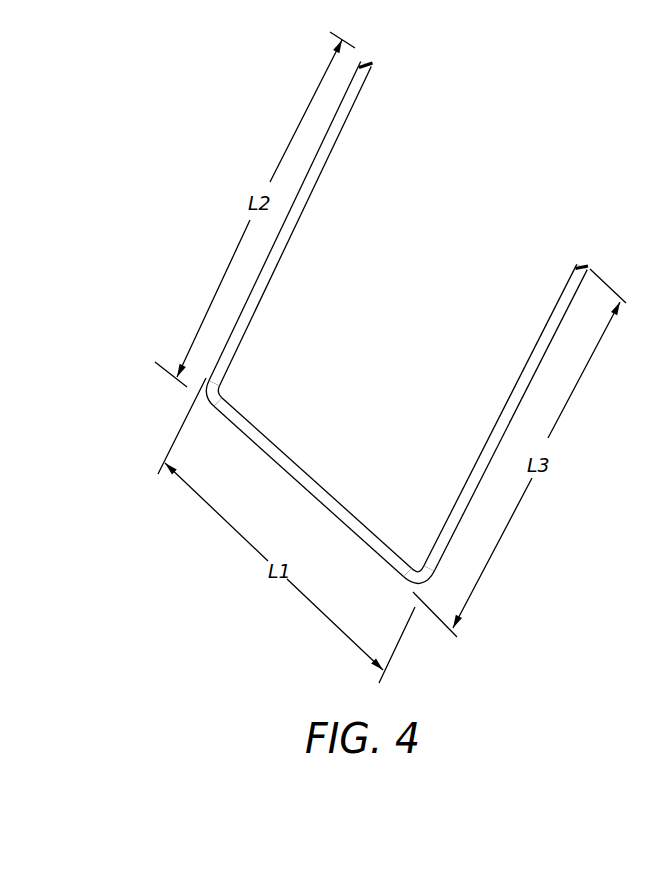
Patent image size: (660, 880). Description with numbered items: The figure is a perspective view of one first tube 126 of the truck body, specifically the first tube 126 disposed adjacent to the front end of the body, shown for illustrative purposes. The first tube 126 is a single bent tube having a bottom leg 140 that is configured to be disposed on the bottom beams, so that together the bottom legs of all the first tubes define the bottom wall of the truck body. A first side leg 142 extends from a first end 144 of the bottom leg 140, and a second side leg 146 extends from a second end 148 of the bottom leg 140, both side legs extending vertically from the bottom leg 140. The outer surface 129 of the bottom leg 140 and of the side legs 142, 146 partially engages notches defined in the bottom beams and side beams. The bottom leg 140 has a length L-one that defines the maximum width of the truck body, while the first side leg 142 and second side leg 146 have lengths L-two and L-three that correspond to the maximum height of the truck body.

The first tube 126 is at (592, 181).
The outer surface 129 is at (359, 520).
The bottom leg 140 is at (276, 463).
The first side leg 142 is at (307, 198).
The first end 144 is at (245, 378).
The second side leg 146 is at (503, 408).
The second end 148 is at (412, 557).